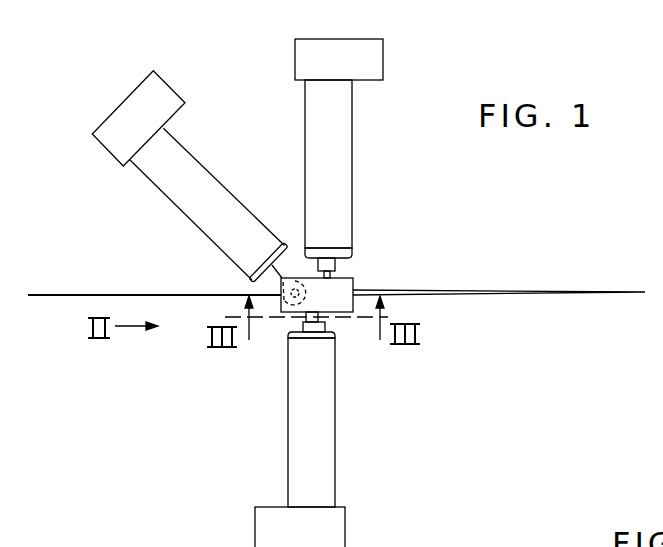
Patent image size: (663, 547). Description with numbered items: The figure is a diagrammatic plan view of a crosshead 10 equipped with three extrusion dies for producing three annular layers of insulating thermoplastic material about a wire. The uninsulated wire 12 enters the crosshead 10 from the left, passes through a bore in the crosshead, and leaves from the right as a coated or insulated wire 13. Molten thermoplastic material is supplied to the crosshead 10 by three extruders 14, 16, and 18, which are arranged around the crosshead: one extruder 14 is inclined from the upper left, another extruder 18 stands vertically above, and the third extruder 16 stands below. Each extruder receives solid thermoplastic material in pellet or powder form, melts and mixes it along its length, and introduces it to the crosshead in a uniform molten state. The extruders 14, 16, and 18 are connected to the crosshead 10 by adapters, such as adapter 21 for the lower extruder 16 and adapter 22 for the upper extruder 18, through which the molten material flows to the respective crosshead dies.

In FIG. 1, the crosshead 10 is at (338, 285).
In FIG. 2, the crosshead 10 is at (541, 546).
In FIG. 1, the uninsulated wire 12 is at (97, 294).
In FIG. 1, the coated or insulated wire 13 is at (497, 291).
In FIG. 1, the extruder 14 is at (219, 198).
In FIG. 1, the extruder 16 is at (317, 435).
In FIG. 1, the extruder 18 is at (337, 197).
In FIG. 1, the adapter 21 is at (318, 324).
In FIG. 1, the adapter 22 is at (333, 263).